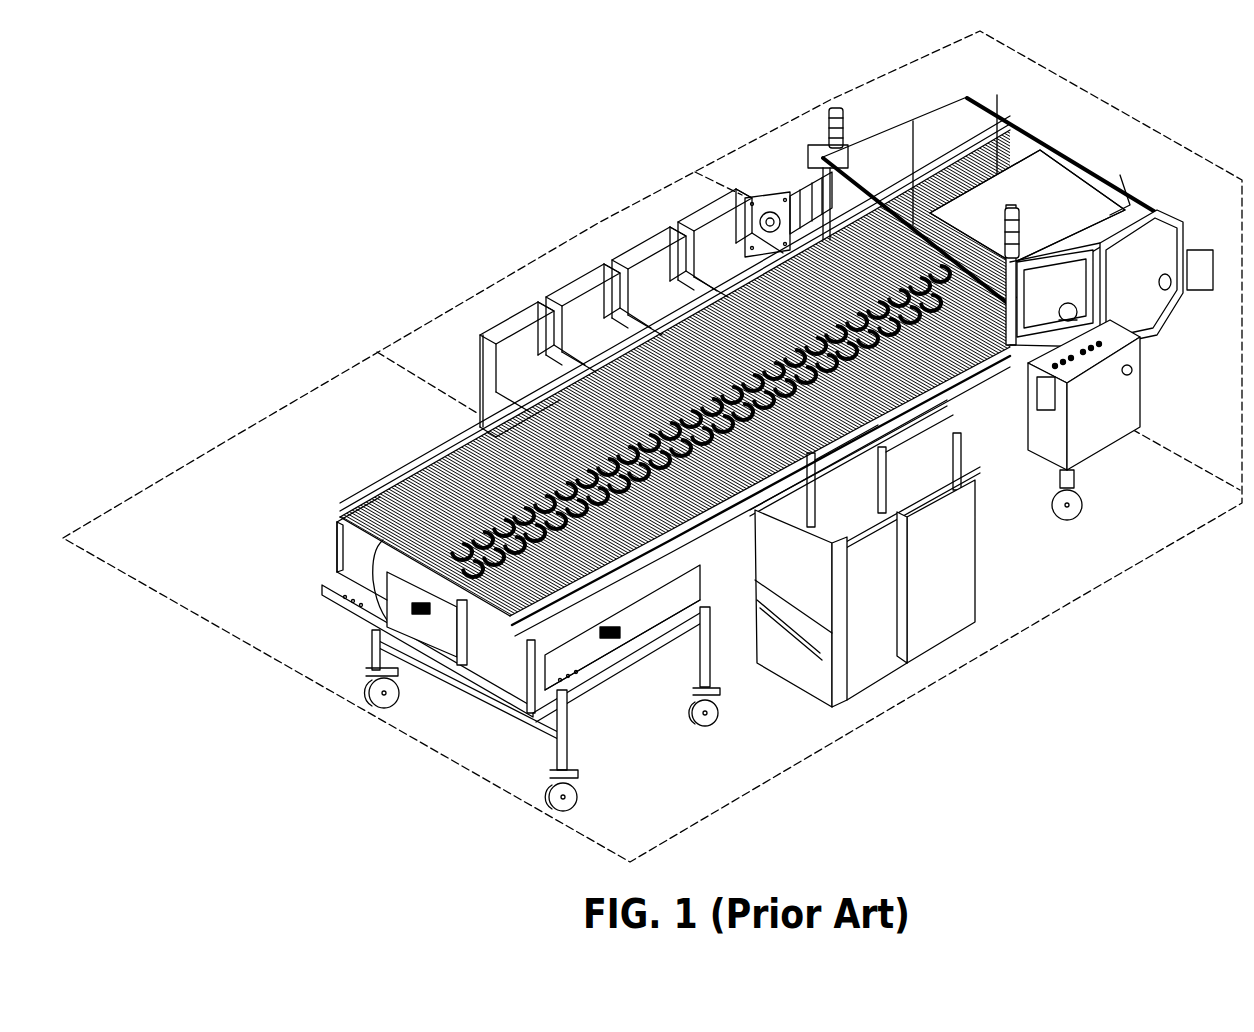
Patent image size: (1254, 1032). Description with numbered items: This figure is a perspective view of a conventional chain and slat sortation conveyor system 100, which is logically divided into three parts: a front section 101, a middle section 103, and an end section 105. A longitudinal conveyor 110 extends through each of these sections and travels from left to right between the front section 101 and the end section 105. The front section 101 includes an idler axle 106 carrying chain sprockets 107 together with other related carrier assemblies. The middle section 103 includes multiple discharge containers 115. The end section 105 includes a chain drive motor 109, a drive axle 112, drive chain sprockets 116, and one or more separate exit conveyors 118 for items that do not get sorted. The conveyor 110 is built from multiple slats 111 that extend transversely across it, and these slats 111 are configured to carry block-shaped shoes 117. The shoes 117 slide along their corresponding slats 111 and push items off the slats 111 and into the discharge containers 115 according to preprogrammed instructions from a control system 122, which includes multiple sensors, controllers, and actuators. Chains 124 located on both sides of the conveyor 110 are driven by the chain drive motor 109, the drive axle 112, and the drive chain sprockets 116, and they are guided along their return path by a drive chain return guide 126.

The sortation conveyor system 100 is at (372, 93).
The front section 101 is at (257, 422).
The middle section 103 is at (540, 257).
The end section 105 is at (828, 96).
The idler axle 106 is at (372, 518).
The chain sprockets 107 is at (342, 556).
The chain drive motor 109 is at (762, 196).
The longitudinal conveyor 110 is at (378, 493).
The slats 111 is at (577, 630).
The drive axle 112 is at (745, 250).
The discharge containers 115 is at (957, 613).
The drive chain sprockets 116 is at (1087, 483).
The shoes 117 is at (478, 588).
The exit conveyors 118 is at (1053, 197).
The control system 122 is at (477, 415).
The chains 124 is at (522, 592).
The drive chain return guide 126 is at (980, 467).